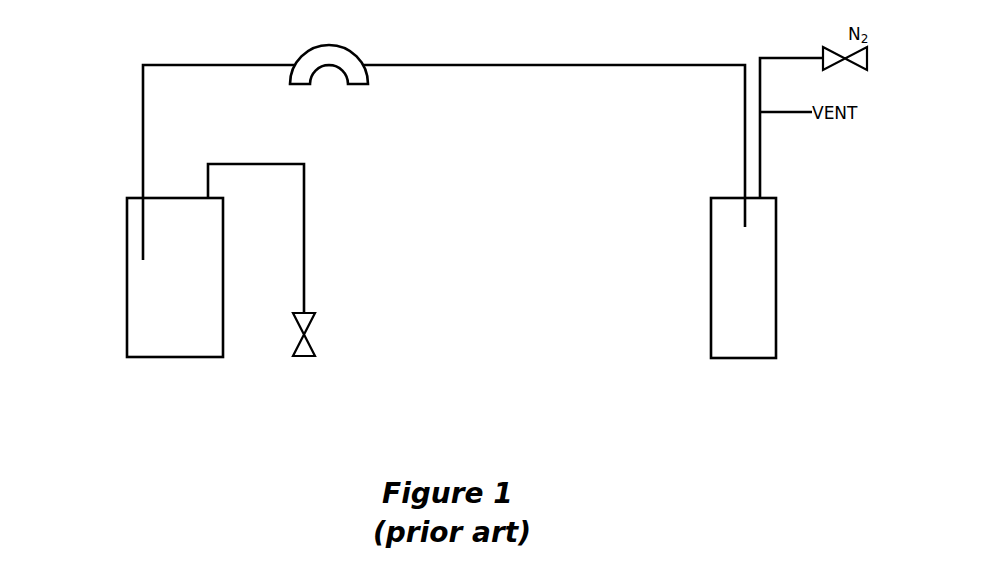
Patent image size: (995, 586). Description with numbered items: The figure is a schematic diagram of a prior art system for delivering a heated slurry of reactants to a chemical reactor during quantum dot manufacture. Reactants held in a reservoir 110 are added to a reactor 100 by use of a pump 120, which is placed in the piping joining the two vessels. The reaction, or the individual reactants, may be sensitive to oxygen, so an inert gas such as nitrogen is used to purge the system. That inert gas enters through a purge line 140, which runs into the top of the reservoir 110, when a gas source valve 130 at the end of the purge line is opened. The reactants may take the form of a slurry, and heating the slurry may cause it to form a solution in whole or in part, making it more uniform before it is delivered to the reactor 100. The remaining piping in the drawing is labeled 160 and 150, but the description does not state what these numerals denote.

The reactor 100 is at (711, 250).
The reservoir 110 is at (127, 279).
The pump 120 is at (300, 57).
The gas source valve 130 is at (315, 344).
The purge line 140 is at (305, 241).
The transfer line to reactor 150 is at (547, 65).
The reservoir outlet line 160 is at (143, 126).